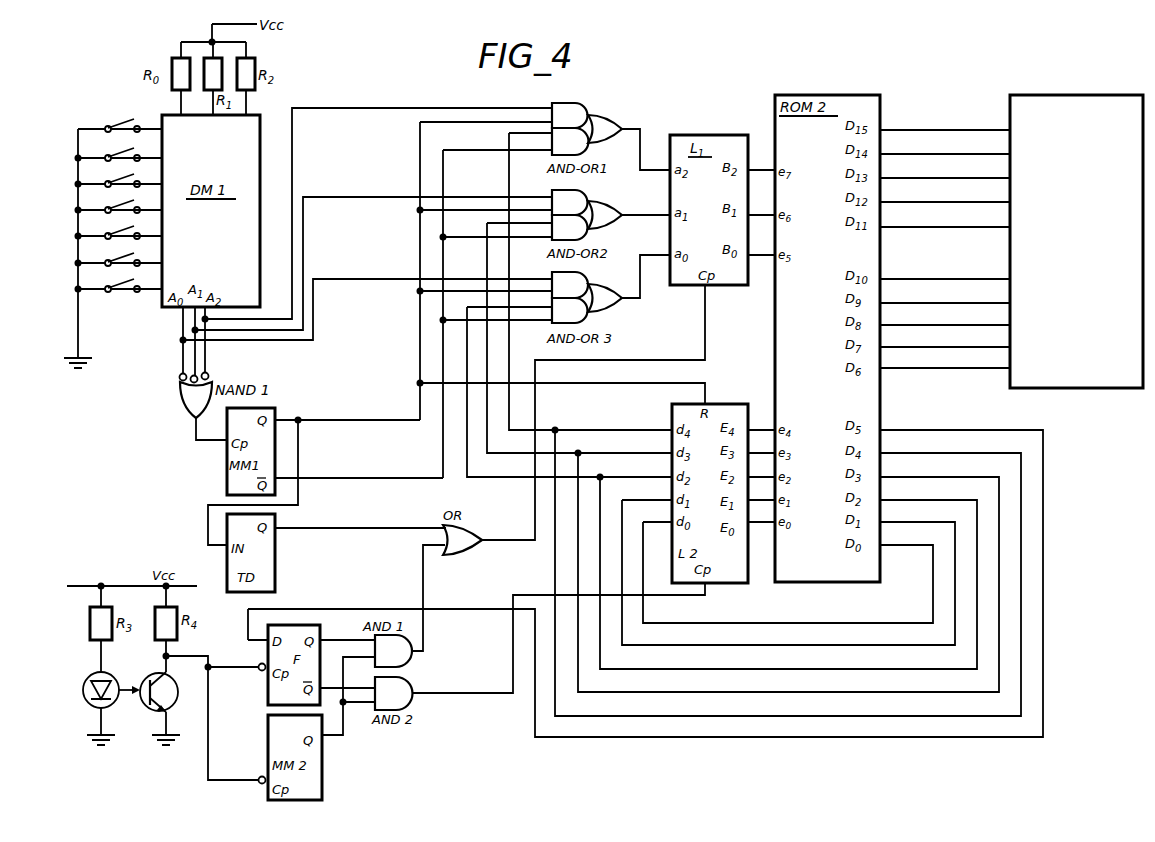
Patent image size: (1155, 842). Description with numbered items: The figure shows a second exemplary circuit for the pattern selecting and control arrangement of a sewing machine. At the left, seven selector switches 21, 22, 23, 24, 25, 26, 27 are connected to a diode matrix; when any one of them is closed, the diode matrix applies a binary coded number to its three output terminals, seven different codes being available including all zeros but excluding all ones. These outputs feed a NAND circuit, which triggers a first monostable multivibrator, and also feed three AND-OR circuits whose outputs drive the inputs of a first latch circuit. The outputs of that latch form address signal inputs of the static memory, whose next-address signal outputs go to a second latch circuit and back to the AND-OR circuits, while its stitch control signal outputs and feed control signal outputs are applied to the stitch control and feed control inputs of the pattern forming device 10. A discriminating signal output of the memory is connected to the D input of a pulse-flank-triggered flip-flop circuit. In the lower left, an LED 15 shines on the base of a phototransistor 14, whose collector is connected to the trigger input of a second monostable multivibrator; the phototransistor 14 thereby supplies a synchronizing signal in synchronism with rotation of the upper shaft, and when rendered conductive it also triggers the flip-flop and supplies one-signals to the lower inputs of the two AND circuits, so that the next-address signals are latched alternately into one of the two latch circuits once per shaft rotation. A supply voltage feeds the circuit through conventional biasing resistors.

The pattern forming device 10 is at (1104, 250).
The phototransistor 14 is at (154, 677).
The LED 15 is at (94, 677).
The selector switch 21 is at (120, 121).
The selector switch 22 is at (120, 150).
The selector switch 23 is at (120, 176).
The selector switch 24 is at (120, 202).
The selector switch 25 is at (120, 228).
The selector switch 26 is at (120, 255).
The selector switch 27 is at (120, 281).